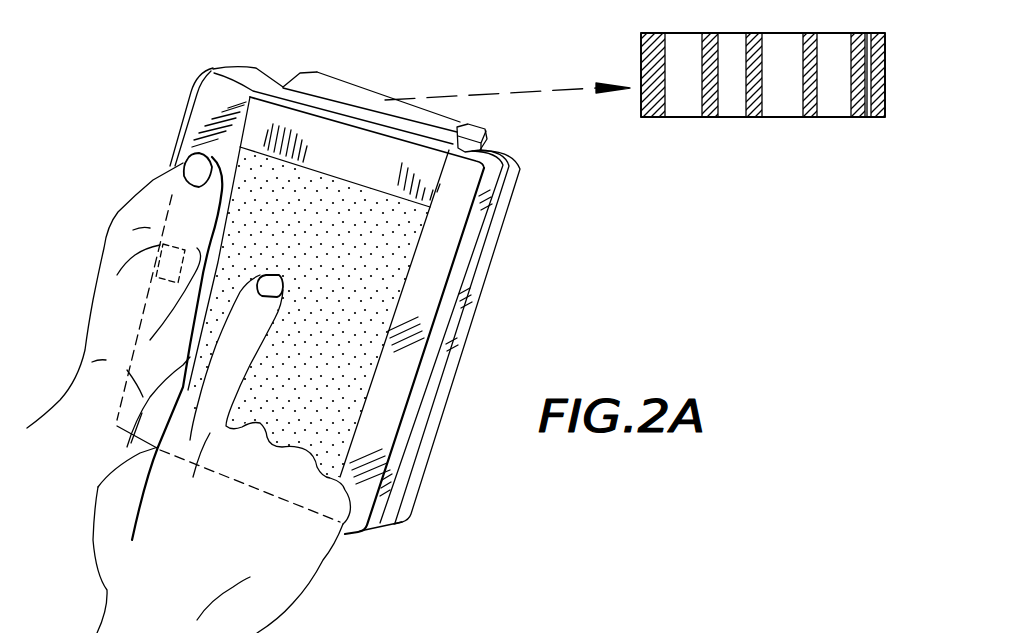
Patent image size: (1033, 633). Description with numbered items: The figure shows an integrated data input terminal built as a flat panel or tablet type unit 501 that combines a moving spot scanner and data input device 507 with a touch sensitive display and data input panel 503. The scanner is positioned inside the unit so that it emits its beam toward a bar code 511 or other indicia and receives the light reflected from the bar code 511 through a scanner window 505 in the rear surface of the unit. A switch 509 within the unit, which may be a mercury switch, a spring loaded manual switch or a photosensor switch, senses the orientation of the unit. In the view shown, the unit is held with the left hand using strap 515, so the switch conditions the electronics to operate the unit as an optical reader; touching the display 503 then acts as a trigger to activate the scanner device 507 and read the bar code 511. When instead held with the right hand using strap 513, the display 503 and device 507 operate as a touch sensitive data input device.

The flat panel unit 501 is at (497, 162).
The touch sensitive display and data input panel 503 is at (400, 292).
The scanner window 505 is at (459, 128).
The moving spot scanner and data input device 507 is at (355, 385).
The switch 509 is at (170, 240).
The bar code 511 is at (790, 14).
The strap 513 is at (473, 297).
The strap 515 is at (172, 136).